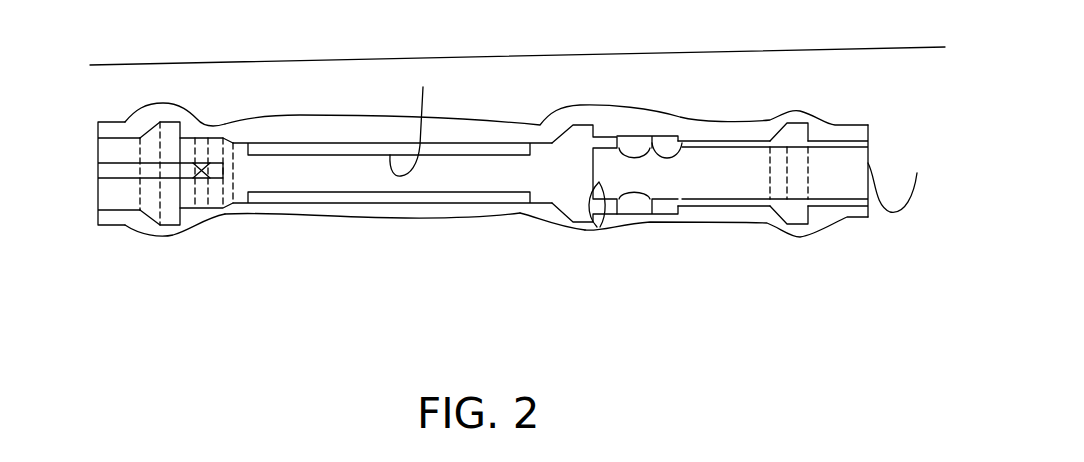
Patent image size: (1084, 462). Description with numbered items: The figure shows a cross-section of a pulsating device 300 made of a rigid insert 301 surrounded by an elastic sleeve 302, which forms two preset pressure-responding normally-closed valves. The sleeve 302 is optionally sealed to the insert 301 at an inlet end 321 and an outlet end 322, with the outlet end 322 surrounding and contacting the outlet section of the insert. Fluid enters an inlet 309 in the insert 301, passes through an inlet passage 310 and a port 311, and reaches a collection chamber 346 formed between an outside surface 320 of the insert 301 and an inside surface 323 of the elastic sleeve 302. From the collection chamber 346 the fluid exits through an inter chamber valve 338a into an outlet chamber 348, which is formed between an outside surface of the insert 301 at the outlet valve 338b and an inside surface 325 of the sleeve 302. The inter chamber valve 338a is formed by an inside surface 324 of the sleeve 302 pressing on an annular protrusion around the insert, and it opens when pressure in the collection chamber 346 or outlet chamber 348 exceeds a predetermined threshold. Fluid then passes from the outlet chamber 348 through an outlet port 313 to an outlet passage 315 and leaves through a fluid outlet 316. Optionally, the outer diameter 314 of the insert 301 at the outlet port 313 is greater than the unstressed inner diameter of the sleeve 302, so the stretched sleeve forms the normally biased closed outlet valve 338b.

The pulsating device 300 is at (487, 148).
The insert 301 is at (290, 143).
The elastic sleeve 302 is at (428, 220).
The inlet 309 is at (108, 172).
The inlet passage 310 is at (170, 172).
The port 311 is at (200, 152).
The outlet port 313 is at (635, 145).
The outer diameter 314 is at (680, 157).
The outlet passage 315 is at (755, 163).
The fluid outlet 316 is at (908, 179).
The outside surface 320 is at (473, 143).
The inlet end 321 is at (110, 232).
The outlet end 322 is at (850, 220).
The inside surface 323 is at (422, 118).
The inside surface 324 is at (599, 228).
The inside surface 325 is at (690, 160).
The inter chamber valve 338a is at (585, 231).
The outlet valve 338b is at (643, 203).
The collection chamber 346 is at (308, 197).
The outlet chamber 348 is at (633, 147).